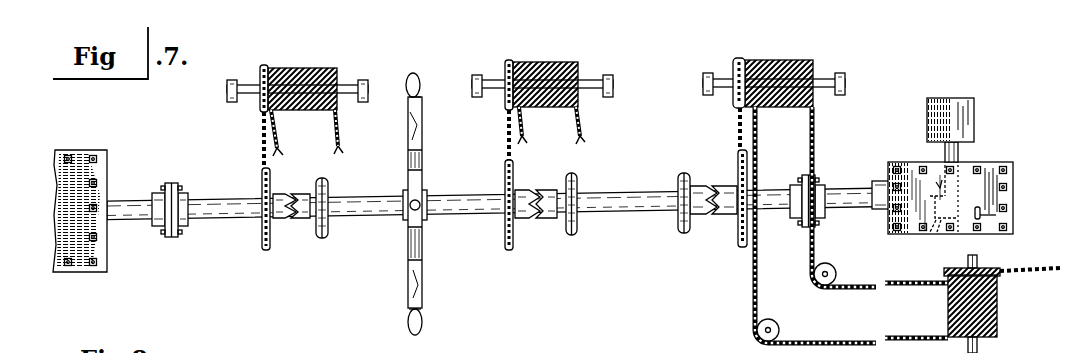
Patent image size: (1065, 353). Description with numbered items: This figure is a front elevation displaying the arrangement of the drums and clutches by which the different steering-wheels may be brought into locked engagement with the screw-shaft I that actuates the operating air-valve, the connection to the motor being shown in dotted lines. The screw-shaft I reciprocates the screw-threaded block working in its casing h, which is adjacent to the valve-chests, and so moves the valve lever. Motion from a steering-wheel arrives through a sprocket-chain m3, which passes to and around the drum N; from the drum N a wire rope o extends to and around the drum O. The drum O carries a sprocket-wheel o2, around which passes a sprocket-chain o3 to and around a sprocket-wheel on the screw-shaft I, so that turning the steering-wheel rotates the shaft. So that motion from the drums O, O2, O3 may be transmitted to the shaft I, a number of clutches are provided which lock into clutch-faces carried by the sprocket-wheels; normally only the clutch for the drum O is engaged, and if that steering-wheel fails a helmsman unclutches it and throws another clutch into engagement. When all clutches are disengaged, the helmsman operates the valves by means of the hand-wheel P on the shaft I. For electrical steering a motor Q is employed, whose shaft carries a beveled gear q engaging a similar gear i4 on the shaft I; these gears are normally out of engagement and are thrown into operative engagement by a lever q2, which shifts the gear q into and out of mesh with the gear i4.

The casing h is at (109, 163).
The screw-shaft I is at (615, 192).
The beveled gear i4 is at (938, 186).
The hand-wheel P is at (423, 248).
The drum O is at (777, 60).
The drum O2 is at (542, 97).
The drum O3 is at (297, 104).
The wire rope o is at (923, 286).
The sprocket-wheel o2 is at (736, 71).
The sprocket-chain o3 is at (737, 128).
The motor Q is at (976, 113).
The beveled gear q is at (936, 236).
The lever q2 is at (1013, 215).
The drum N is at (987, 340).
The sprocket-chain m3 is at (1030, 284).